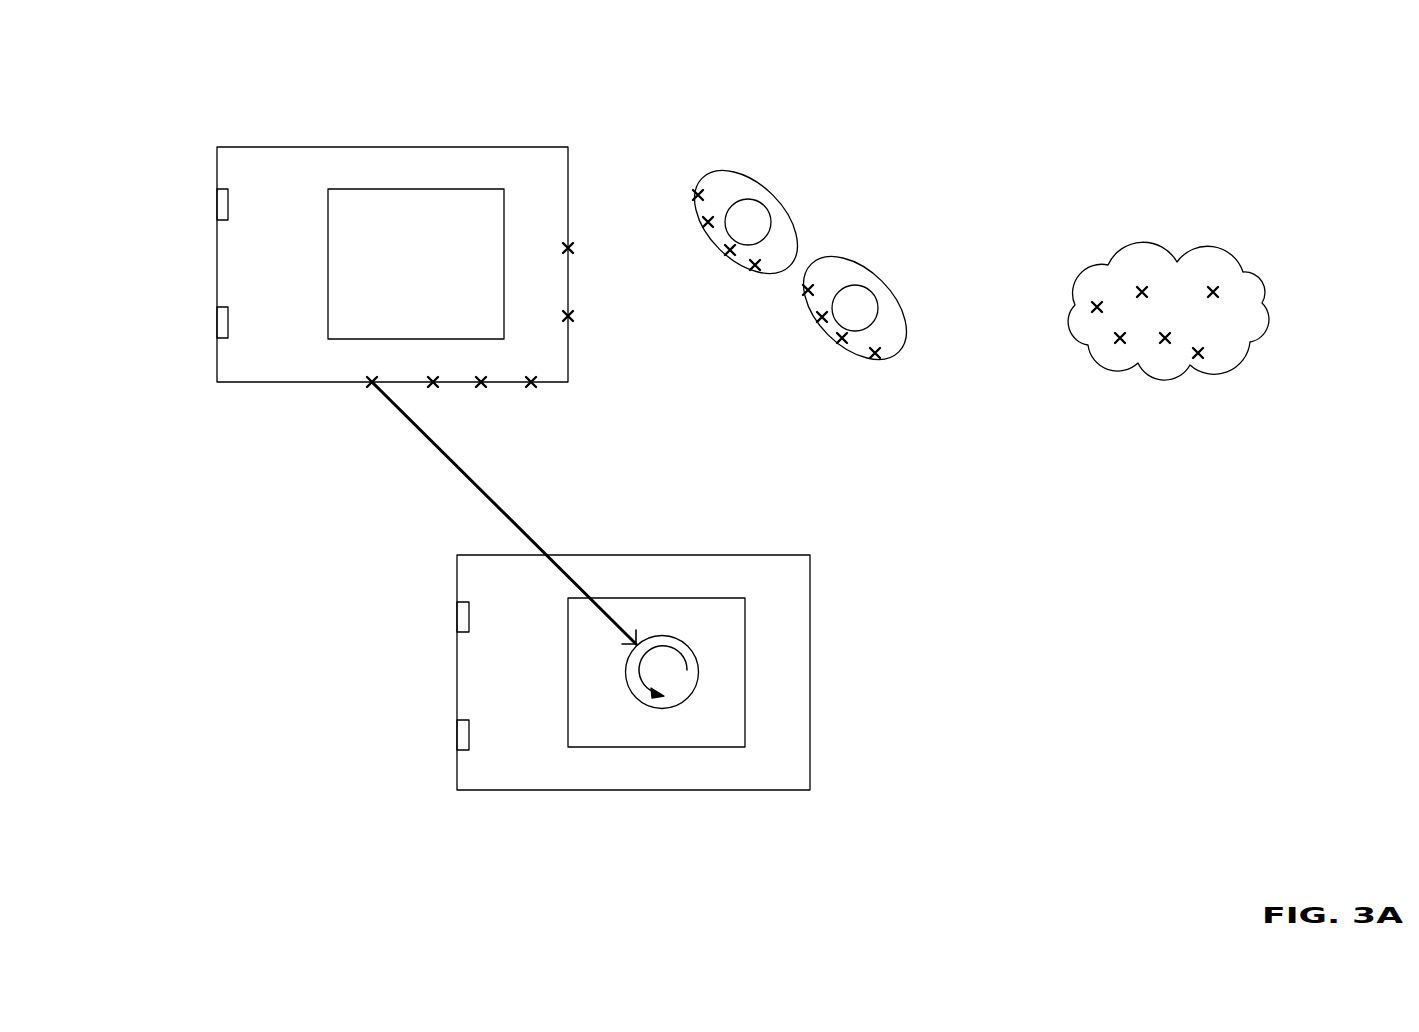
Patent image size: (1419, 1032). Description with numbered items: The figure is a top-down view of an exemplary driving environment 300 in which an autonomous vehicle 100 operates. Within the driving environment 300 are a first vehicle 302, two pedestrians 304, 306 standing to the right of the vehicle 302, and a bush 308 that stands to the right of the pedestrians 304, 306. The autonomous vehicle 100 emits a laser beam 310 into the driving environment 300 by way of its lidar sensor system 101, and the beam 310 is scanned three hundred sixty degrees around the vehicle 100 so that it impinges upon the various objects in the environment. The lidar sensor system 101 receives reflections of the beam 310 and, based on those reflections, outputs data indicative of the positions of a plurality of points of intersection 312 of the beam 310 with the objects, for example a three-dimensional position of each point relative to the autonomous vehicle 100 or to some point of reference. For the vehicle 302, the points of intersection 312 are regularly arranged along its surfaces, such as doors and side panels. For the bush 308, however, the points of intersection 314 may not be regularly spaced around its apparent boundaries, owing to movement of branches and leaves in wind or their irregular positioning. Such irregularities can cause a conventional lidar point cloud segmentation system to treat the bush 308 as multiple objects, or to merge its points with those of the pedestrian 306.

The driving environment 300 is at (133, 72).
The first vehicle 302 is at (393, 147).
The pedestrian 304 is at (772, 198).
The pedestrian 306 is at (877, 282).
The bush 308 is at (1200, 252).
The laser beam 310 is at (522, 530).
The points of intersection 312 is at (372, 382).
The points of intersection with the bush 314 is at (1200, 355).
The autonomous vehicle 100 is at (810, 673).
The lidar sensor system 101 is at (660, 637).